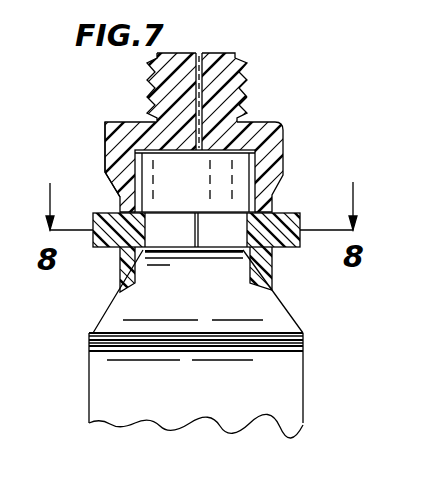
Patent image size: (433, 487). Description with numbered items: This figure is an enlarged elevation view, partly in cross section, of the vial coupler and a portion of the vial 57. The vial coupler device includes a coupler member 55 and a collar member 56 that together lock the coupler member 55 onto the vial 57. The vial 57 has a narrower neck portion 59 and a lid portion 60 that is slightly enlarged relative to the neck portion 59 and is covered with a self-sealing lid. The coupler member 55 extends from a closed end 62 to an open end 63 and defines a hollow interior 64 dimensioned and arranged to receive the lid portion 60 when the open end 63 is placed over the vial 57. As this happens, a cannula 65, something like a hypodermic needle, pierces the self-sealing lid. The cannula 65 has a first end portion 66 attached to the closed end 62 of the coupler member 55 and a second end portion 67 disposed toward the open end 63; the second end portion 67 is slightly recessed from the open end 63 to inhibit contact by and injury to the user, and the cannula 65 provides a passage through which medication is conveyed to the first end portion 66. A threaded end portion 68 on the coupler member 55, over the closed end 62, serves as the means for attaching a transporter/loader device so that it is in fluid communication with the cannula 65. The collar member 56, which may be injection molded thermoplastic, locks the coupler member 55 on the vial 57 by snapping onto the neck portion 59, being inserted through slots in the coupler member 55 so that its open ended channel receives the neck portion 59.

The coupler member 55 is at (105, 124).
The collar member 56 is at (300, 213).
The vial 57 is at (303, 387).
The neck portion 59 is at (170, 244).
The lid portion 60 is at (152, 178).
The closed end 62 is at (237, 53).
The open end 63 is at (272, 283).
The hollow interior 64 is at (283, 144).
The cannula 65 is at (243, 111).
The first end portion 66 is at (199, 53).
The second end portion 67 is at (203, 256).
The threaded end portion 68 is at (245, 82).